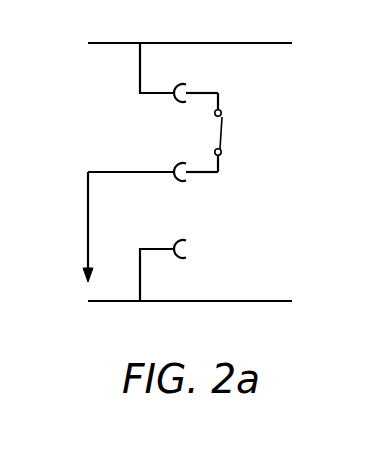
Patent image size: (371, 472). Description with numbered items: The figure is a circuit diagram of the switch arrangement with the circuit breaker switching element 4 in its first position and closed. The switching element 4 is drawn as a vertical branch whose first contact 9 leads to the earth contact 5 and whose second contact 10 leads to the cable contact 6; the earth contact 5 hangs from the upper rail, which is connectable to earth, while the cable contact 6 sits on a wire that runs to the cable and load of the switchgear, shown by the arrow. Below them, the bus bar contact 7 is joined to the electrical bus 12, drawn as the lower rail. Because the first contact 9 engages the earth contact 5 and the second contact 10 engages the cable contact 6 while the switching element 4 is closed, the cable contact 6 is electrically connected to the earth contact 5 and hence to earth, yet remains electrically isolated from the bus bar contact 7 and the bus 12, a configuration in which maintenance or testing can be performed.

The switching device 4 is at (222, 130).
The earth contact 5 is at (180, 103).
The cable contact 6 is at (180, 182).
The bus bar contact 7 is at (180, 259).
The first contact 9 is at (203, 93).
The second contact 10 is at (212, 174).
The electrical bus 12 is at (250, 301).